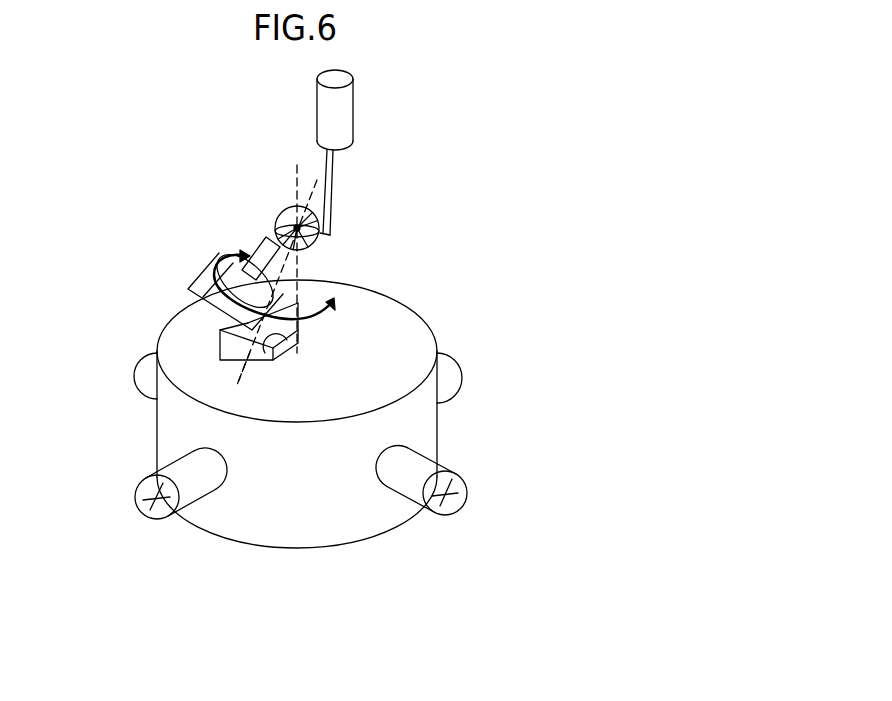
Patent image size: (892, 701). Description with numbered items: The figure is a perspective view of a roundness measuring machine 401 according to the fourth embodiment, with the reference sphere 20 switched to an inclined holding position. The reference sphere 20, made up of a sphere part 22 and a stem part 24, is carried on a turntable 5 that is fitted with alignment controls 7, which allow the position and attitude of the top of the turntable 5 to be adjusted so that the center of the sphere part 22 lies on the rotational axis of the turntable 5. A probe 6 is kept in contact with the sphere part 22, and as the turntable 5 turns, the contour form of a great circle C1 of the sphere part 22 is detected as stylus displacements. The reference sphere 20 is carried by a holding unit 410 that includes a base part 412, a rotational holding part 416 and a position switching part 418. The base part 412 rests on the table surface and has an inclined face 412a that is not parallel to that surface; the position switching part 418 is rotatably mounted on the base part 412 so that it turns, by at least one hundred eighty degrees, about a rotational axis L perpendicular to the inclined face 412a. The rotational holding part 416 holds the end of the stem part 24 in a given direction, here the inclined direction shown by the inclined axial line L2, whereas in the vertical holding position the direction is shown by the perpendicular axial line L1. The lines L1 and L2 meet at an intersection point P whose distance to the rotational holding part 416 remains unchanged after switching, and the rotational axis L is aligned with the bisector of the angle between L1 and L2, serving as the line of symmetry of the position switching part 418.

The roundness measuring machine 401 is at (520, 146).
The turntable 5 is at (377, 362).
The alignment controls 7 is at (468, 488).
The probe 6 is at (337, 210).
The reference sphere 20 is at (273, 86).
The sphere part 22 is at (290, 208).
The stem part 24 is at (260, 256).
The holding unit 410 is at (165, 258).
The base part 412 is at (228, 347).
The inclined face 412a is at (285, 346).
The rotational holding part 416 is at (230, 258).
The position switching part 418 is at (205, 300).
The perpendicular axial line L1 is at (294, 170).
The inclined axial line L2 is at (337, 185).
The rotational axis L is at (240, 377).
The intersection point P is at (293, 224).
The great circle C1 is at (319, 238).